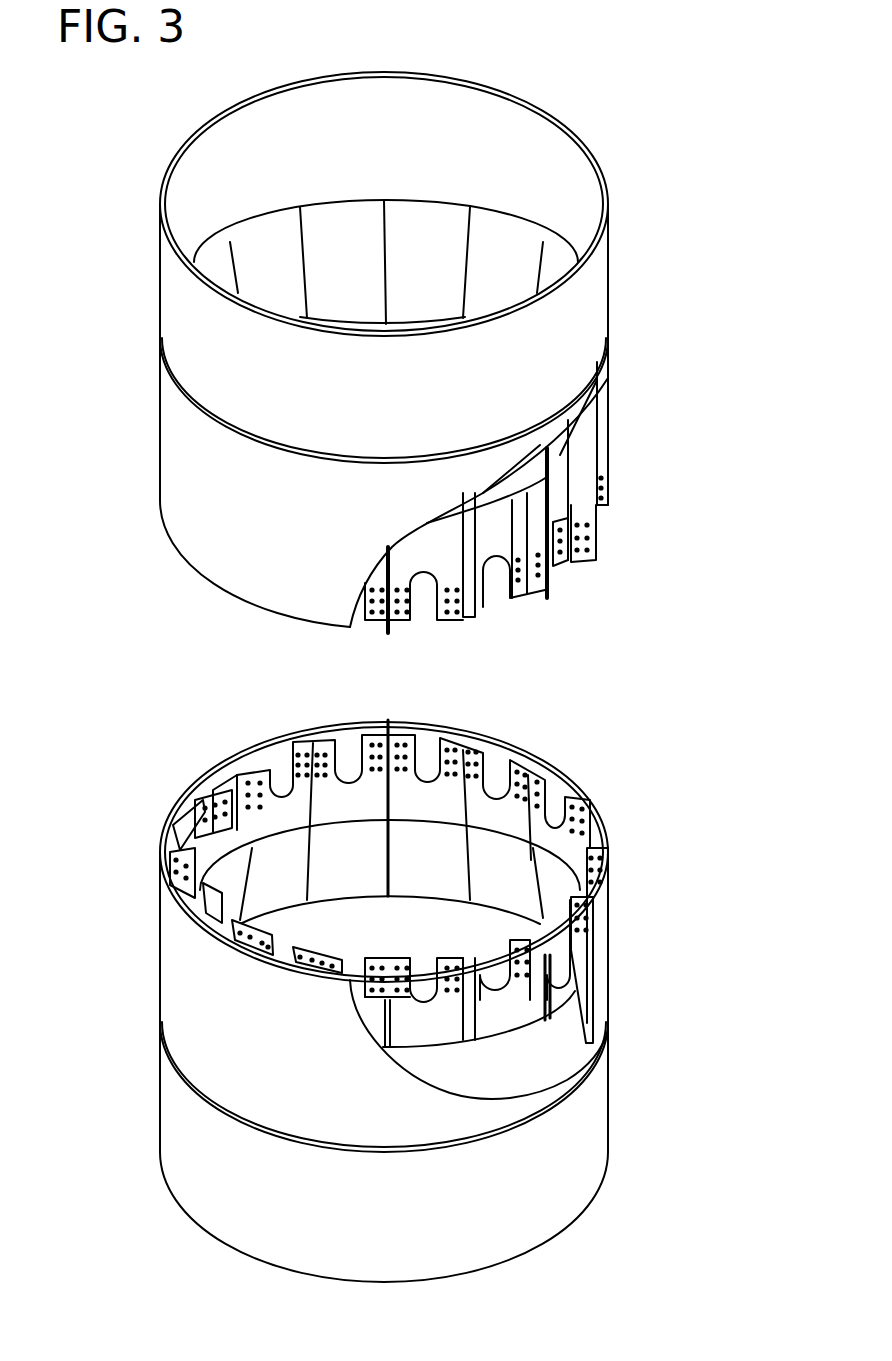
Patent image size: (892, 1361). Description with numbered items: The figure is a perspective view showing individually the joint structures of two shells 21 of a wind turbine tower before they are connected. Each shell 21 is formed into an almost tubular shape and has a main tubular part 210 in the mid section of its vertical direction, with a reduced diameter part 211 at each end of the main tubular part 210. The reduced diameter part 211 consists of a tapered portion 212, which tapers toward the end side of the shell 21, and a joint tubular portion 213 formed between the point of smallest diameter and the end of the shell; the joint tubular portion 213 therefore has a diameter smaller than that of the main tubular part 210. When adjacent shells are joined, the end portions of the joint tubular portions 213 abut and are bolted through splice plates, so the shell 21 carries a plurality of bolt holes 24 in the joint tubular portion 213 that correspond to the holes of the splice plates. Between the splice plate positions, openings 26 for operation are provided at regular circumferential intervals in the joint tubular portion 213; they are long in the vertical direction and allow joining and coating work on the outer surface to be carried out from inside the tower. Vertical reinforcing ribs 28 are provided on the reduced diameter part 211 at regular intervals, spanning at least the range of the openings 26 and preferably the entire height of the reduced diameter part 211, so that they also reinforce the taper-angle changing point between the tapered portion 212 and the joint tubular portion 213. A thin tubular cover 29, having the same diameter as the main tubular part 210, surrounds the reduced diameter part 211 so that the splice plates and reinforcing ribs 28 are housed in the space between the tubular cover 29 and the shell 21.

The shell 21 is at (612, 186).
The main tubular part 210 is at (600, 312).
The reduced diameter part 211 is at (720, 440).
The tapered portion 212 is at (563, 452).
The joint tubular portion 213 is at (563, 512).
The reinforcing rib 28 is at (603, 421).
The tubular cover 29 is at (165, 446).
The bolt hole 24 is at (445, 600).
The opening for operation 26 is at (497, 590).